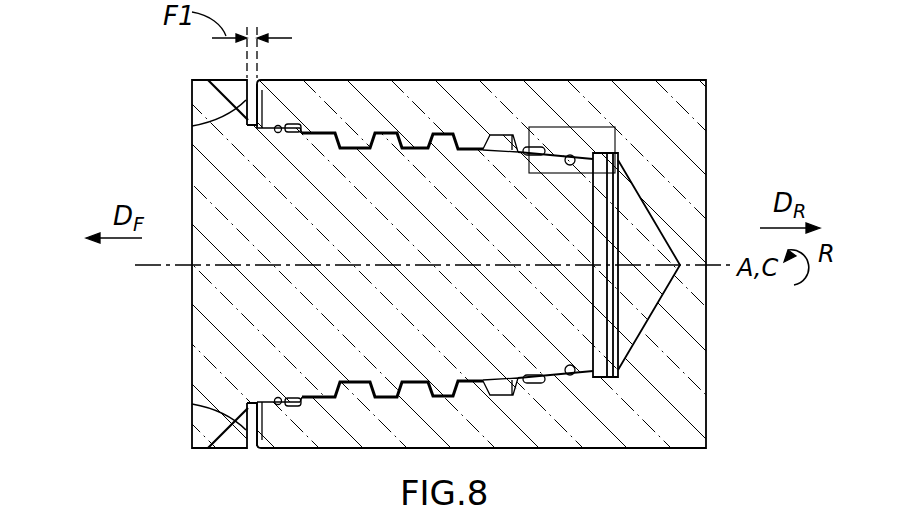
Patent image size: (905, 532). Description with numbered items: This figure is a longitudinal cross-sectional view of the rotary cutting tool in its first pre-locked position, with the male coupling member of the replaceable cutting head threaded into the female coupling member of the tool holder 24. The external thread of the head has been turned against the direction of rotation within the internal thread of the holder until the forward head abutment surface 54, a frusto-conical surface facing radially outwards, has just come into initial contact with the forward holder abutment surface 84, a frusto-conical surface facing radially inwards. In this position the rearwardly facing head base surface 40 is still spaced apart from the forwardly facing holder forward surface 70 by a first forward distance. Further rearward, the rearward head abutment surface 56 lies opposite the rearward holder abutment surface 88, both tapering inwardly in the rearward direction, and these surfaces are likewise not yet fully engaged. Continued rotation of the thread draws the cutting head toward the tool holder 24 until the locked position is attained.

The tool holder 24 is at (713, 50).
The head base surface 40 is at (248, 100).
The holder forward surface 70 is at (243, 110).
The forward head abutment surface 54 is at (273, 128).
The forward holder abutment surface 84 is at (297, 128).
The rearward head abutment surface 56 is at (563, 153).
The rearward holder abutment surface 88 is at (572, 155).